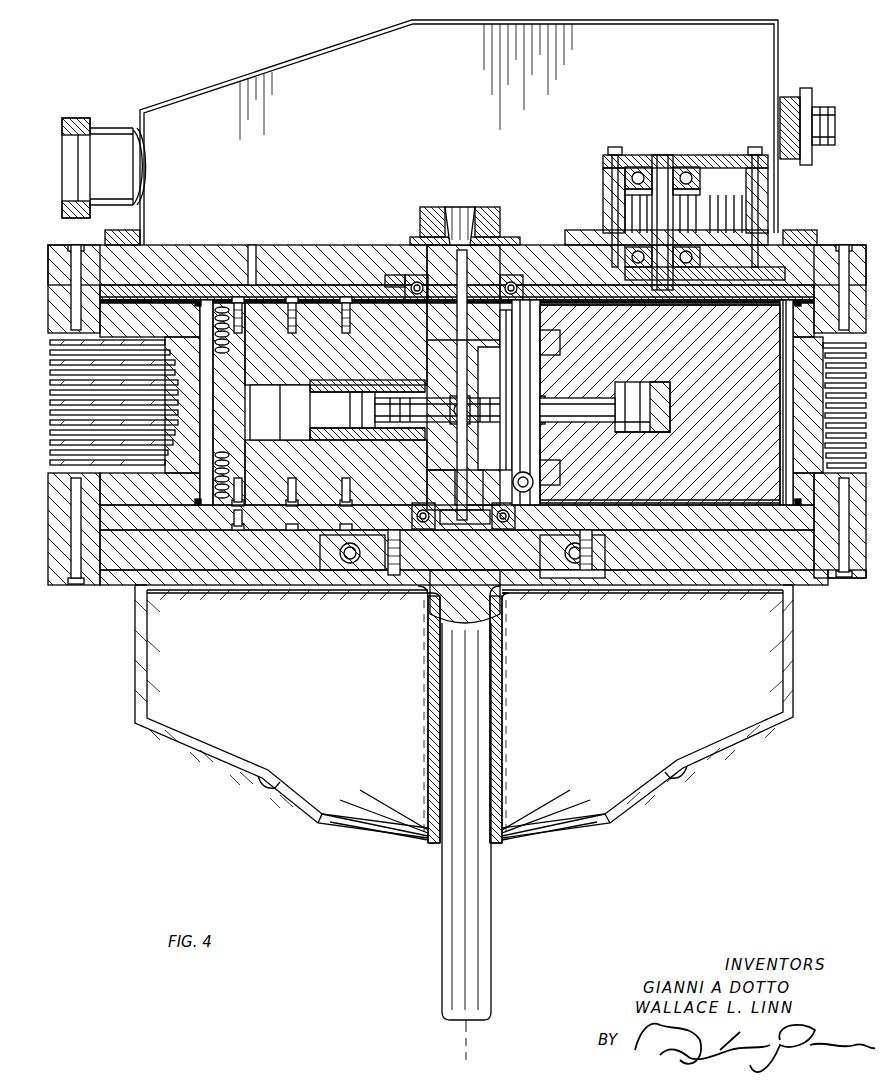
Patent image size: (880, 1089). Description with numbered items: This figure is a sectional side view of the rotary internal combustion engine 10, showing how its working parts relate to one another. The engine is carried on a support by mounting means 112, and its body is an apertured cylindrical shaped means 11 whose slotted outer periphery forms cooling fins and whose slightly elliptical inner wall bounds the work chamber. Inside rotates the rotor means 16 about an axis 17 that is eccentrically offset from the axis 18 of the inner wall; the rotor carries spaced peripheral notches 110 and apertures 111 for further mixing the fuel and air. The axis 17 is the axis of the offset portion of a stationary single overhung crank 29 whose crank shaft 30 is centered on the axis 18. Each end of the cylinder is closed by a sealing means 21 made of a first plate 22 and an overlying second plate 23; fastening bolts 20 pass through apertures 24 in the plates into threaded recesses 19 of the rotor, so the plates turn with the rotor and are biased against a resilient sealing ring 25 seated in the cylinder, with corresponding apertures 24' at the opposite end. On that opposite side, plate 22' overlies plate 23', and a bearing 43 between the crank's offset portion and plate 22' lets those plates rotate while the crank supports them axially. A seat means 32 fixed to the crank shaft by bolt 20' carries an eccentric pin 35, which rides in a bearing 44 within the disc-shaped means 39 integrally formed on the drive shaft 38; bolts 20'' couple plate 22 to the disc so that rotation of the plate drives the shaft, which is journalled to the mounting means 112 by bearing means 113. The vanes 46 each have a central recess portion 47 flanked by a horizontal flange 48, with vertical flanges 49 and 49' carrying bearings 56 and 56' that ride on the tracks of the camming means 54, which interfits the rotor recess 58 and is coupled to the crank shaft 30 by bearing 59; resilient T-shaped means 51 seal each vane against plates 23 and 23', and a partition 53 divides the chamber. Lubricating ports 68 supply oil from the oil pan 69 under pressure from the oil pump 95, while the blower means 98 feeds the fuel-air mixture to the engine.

The rotary internal combustion engine 10 is at (136, 90).
The cylindrical shaped means 11 is at (820, 349).
The rotor means 16 is at (172, 402).
The axis of rotor means 17 is at (466, 1025).
The axis of inner wall 18 is at (540, 333).
The threaded recess 19 is at (298, 318).
The fastening bolt 20 is at (292, 490).
The bolt 20' is at (548, 482).
The bolt 20'' is at (490, 552).
The sealing means 21 is at (170, 275).
The first plate 22 is at (457, 529).
The plate 22' is at (457, 263).
The second plate 23 is at (660, 492).
The plate 23' is at (457, 263).
The aperture 24 is at (292, 535).
The screw 24' is at (292, 297).
The resilient sealing ring 25 is at (800, 298).
The stationary single overhung crank 29 is at (465, 378).
The crank shaft 30 is at (518, 353).
The seat means 32 is at (465, 505).
The pin 35 is at (474, 533).
The drive shaft 38 is at (463, 803).
The disc-shaped means 39 is at (457, 576).
The bearing 43 is at (416, 280).
The bearing 44 is at (418, 512).
The vane 46 is at (752, 428).
The recess portion 47 is at (660, 385).
The horizontal flange 48 is at (585, 360).
The vertical flange 49 is at (590, 389).
The vertical flange 49' is at (632, 437).
The T-shaped means 51 is at (680, 312).
The partition 53 is at (782, 372).
The camming means 54 is at (682, 405).
The bearing 56 is at (367, 399).
The bearing 56' is at (367, 424).
The recess of the rotor 58 is at (280, 412).
The bearing 59 is at (442, 402).
The lubricating port 68 is at (460, 208).
The oil pan 69 is at (312, 75).
The oil pump 95 is at (678, 152).
The blower means 98 is at (643, 719).
The peripheral notch 110 is at (230, 466).
The aperture 111 is at (234, 375).
The mounting means 112 is at (355, 256).
The bearing means 113 is at (596, 568).